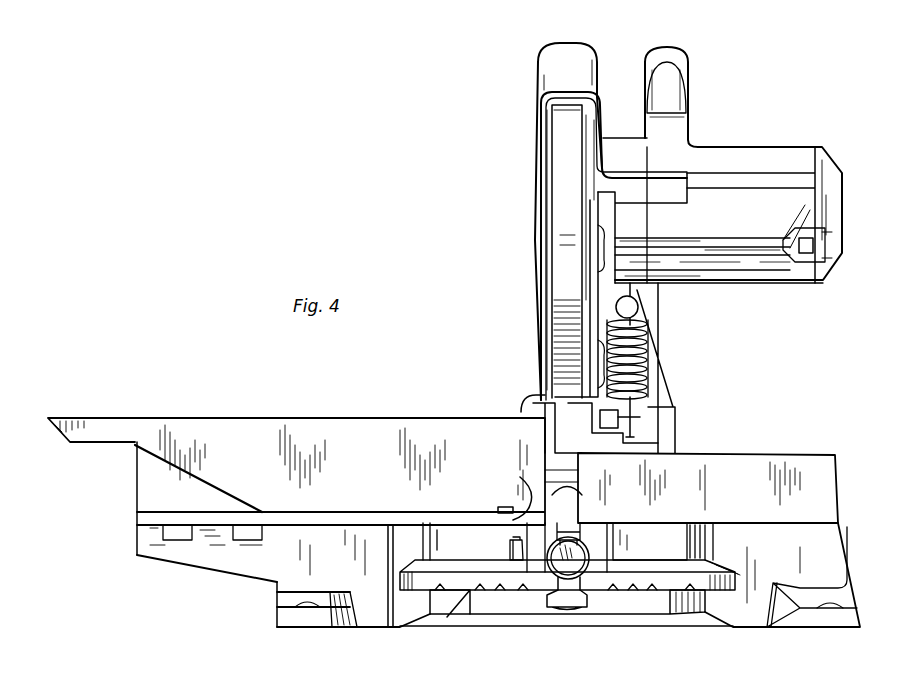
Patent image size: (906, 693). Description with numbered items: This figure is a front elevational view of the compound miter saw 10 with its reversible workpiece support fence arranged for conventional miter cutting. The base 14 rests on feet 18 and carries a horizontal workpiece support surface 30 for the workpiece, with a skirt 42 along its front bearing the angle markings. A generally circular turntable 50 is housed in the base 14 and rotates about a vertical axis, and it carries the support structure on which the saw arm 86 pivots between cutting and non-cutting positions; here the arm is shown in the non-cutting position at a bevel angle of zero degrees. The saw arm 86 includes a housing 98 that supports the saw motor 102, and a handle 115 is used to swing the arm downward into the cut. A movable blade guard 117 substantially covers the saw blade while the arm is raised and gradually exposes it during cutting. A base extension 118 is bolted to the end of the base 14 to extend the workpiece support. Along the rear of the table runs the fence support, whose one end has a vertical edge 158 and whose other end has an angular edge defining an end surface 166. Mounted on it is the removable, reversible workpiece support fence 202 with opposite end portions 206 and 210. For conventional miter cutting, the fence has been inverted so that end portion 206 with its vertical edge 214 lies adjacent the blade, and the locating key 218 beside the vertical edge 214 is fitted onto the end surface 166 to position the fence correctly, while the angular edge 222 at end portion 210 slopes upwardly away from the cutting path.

The miter saw 10 is at (413, 240).
The base 14 is at (527, 623).
The feet 18 is at (273, 627).
The workpiece support surface 30 is at (340, 518).
The skirt 42 is at (462, 593).
The turntable 50 is at (713, 538).
The saw arm 86 is at (586, 45).
The housing 98 is at (710, 147).
The saw motor 102 is at (803, 257).
The handle 115 is at (688, 78).
The movable blade guard 117 is at (533, 410).
The base extension 118 is at (135, 555).
The vertical edge 158 is at (135, 463).
The end surface 166 is at (511, 495).
The workpiece support fence 202 is at (332, 418).
The end portion 206 is at (512, 457).
The end portion 210 is at (207, 480).
The vertical edge 214 is at (543, 476).
The locating key 218 is at (513, 516).
The angular edge 222 is at (207, 482).